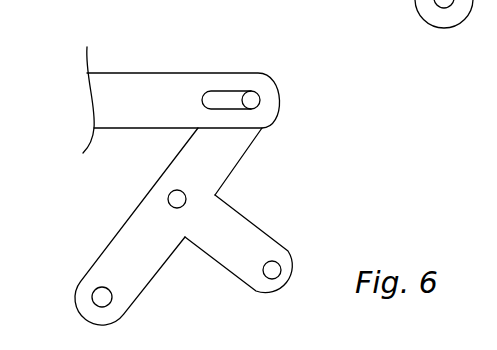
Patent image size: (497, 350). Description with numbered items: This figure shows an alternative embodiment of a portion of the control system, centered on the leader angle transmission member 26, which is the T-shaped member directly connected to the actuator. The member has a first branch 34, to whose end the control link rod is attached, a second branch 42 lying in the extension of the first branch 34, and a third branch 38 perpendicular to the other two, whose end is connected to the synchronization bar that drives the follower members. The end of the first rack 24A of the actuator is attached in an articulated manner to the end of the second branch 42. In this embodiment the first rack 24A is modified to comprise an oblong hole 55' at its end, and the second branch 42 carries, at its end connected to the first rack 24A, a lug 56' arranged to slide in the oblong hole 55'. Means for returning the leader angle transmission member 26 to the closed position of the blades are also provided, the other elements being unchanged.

The first rack 24A is at (205, 83).
The oblong hole 55' is at (226, 61).
The lug 56' is at (285, 78).
The leader angle transmission member 26 is at (183, 169).
The second branch 42 is at (197, 165).
The first branch 34 is at (121, 262).
The third branch 38 is at (232, 250).